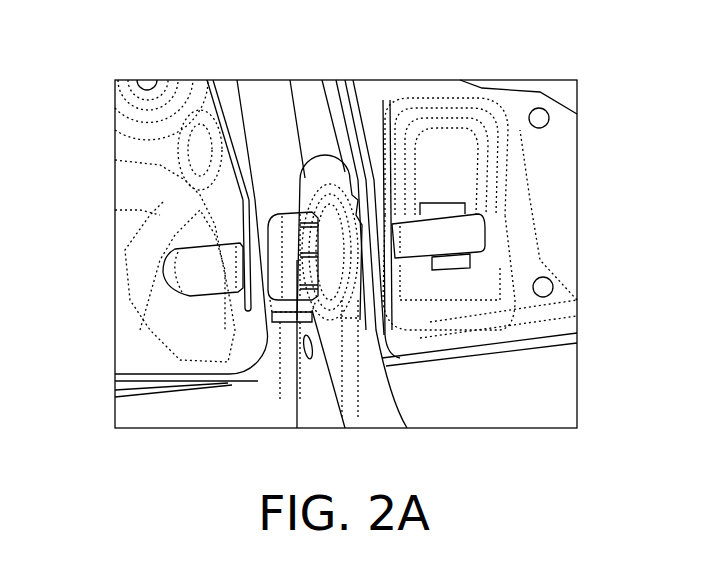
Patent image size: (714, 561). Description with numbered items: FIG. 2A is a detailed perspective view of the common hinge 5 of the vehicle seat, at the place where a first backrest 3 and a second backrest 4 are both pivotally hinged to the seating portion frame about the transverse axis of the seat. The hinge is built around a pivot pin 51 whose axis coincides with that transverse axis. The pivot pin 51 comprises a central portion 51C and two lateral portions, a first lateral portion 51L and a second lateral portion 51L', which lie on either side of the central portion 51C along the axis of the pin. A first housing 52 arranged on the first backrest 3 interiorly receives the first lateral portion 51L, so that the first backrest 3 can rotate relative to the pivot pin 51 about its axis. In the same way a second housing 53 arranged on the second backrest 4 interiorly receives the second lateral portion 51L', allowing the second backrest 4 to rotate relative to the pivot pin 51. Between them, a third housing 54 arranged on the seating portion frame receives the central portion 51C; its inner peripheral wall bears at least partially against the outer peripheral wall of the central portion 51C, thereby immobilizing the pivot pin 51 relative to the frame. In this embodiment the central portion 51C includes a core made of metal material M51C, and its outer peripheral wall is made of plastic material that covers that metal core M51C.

The first backrest 3 is at (149, 80).
The second backrest 4 is at (413, 96).
The common hinge 5 is at (283, 108).
The first housing 52 is at (228, 218).
The second housing 53 is at (403, 195).
The third housing 54 is at (292, 205).
The pivot pin 51 is at (282, 310).
The first lateral portion 51L is at (203, 336).
The second lateral portion 51L' is at (463, 301).
The central portion 51C is at (310, 303).
The core made of metal material M51C is at (412, 243).